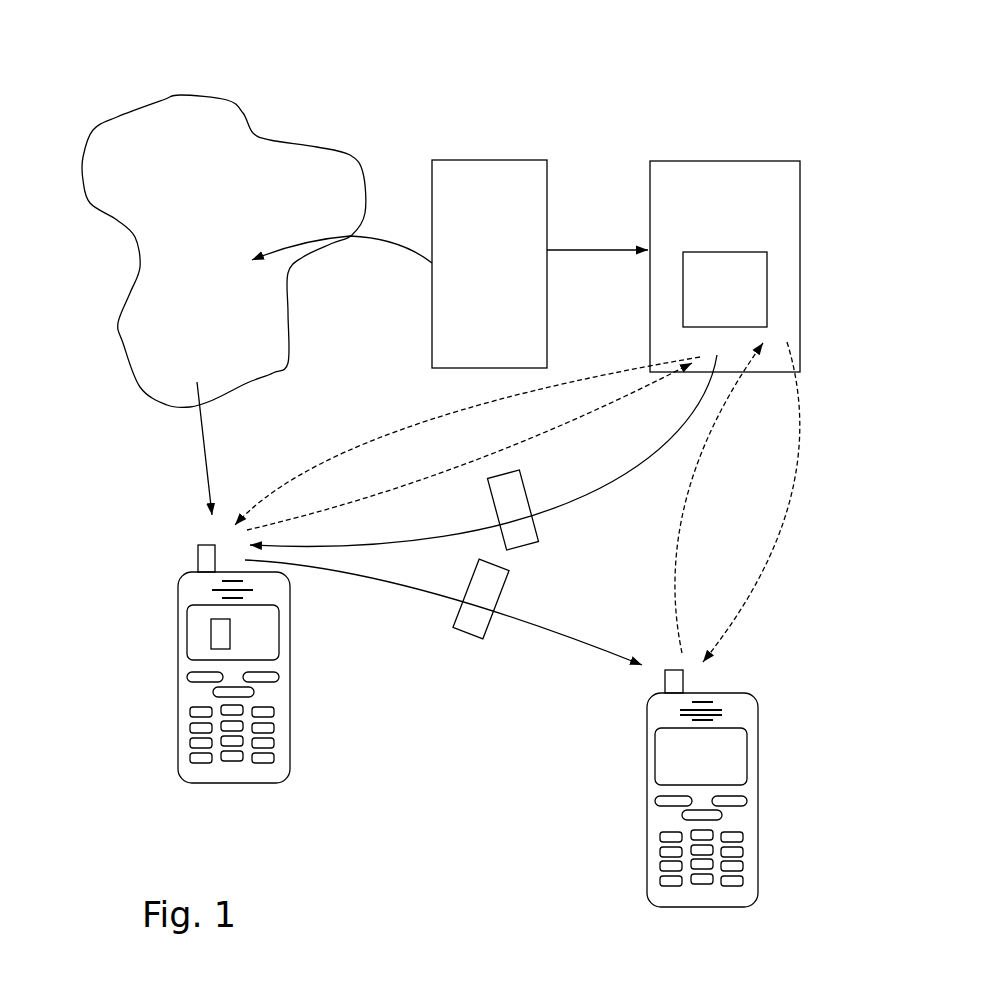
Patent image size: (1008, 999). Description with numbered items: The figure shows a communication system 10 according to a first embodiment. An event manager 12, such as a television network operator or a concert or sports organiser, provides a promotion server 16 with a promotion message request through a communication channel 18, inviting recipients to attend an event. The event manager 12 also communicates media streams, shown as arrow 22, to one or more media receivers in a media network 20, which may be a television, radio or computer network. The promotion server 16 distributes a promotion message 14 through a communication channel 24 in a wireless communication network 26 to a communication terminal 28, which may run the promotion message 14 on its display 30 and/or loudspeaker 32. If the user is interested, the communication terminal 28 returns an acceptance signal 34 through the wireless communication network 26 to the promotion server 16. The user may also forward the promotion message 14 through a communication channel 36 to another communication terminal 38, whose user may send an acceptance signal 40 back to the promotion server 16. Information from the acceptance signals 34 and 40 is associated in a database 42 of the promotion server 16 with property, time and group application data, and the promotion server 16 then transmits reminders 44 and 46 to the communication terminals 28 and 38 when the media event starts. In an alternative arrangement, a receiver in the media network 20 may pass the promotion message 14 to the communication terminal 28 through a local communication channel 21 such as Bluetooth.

The communication system 10 is at (335, 68).
The event manager 12 is at (447, 173).
The promotion message 14 is at (210, 636).
The promotion server 16 is at (747, 161).
The communication channel 18 is at (583, 247).
The media network 20 is at (117, 333).
The local communication channel 21 is at (205, 453).
The arrow 22 is at (398, 250).
The communication channel 24 is at (580, 505).
The wireless communication network 26 is at (868, 387).
The communication terminal 28 is at (228, 664).
The display 30 is at (262, 650).
The loudspeaker 32 is at (253, 590).
The acceptance signal 34 is at (548, 458).
The communication channel 36 is at (443, 612).
The communication terminal 38 is at (647, 817).
The acceptance signal 40 is at (680, 520).
The database 42 is at (683, 300).
The reminder 44 is at (333, 457).
The reminder 46 is at (768, 578).